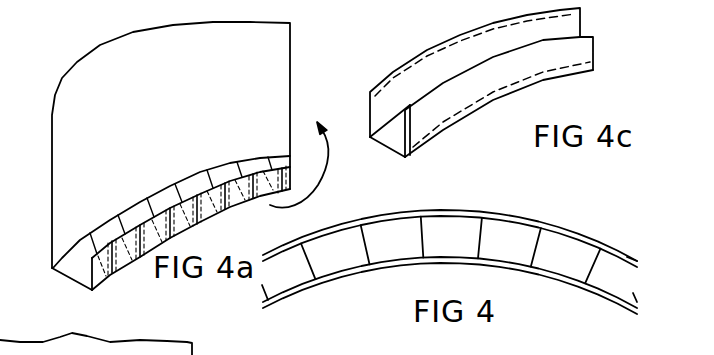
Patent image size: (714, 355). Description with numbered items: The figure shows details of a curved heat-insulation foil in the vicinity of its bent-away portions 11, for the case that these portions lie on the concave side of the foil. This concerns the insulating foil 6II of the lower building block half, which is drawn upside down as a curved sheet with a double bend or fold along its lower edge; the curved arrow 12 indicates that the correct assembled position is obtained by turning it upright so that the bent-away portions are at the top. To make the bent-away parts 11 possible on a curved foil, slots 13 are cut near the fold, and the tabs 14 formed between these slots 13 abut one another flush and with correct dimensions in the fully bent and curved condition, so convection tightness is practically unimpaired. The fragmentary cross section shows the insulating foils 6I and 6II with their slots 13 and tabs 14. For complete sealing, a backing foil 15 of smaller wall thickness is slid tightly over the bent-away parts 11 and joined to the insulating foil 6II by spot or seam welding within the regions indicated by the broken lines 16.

In FIG. 4, the insulating foil 6I is at (595, 305).
In FIG. 4A, the insulating foil 6II is at (150, 145).
In FIG. 4, the insulating foil 6II is at (652, 270).
In FIG. 4A, the bent-away portion 11 is at (212, 205).
In FIG. 4A, the curved arrow 12 is at (332, 173).
In FIG. 4, the slot 13 is at (537, 248).
In FIG. 4A, the tab 14 is at (103, 273).
In FIG. 4, the tab 14 is at (410, 226).
In FIG. 4C, the backing foil 15 is at (595, 53).
In FIG. 4C, the broken lines 16 is at (413, 67).